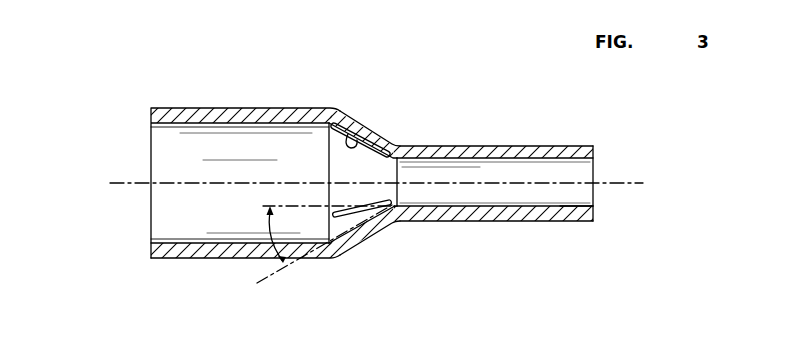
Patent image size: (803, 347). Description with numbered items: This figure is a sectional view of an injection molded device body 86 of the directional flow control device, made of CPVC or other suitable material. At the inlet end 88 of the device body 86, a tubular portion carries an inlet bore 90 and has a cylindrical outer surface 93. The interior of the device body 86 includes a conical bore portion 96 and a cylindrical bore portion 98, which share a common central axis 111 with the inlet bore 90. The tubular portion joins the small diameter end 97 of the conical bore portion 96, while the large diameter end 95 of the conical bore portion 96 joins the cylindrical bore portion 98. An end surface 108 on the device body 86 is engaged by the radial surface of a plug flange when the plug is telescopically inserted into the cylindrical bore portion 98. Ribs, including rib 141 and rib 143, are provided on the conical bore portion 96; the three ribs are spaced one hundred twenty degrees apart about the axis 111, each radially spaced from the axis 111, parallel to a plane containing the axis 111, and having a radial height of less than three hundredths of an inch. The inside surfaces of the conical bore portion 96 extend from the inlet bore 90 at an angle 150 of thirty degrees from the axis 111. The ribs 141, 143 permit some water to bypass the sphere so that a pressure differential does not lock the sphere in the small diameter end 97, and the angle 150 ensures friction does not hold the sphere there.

The device body 86 is at (492, 238).
The inlet end 88 is at (593, 148).
The inlet bore 90 is at (578, 206).
The cylindrical outer surface 93 is at (522, 145).
The large diameter end 95 is at (328, 158).
The conical bore portion 96 is at (330, 122).
The small diameter end 97 is at (398, 172).
The cylindrical bore portion 98 is at (188, 241).
The end surface 108 is at (151, 117).
The central axis 111 is at (138, 178).
The rib 141 is at (350, 220).
The rib 143 is at (362, 140).
The angle 150 is at (272, 233).